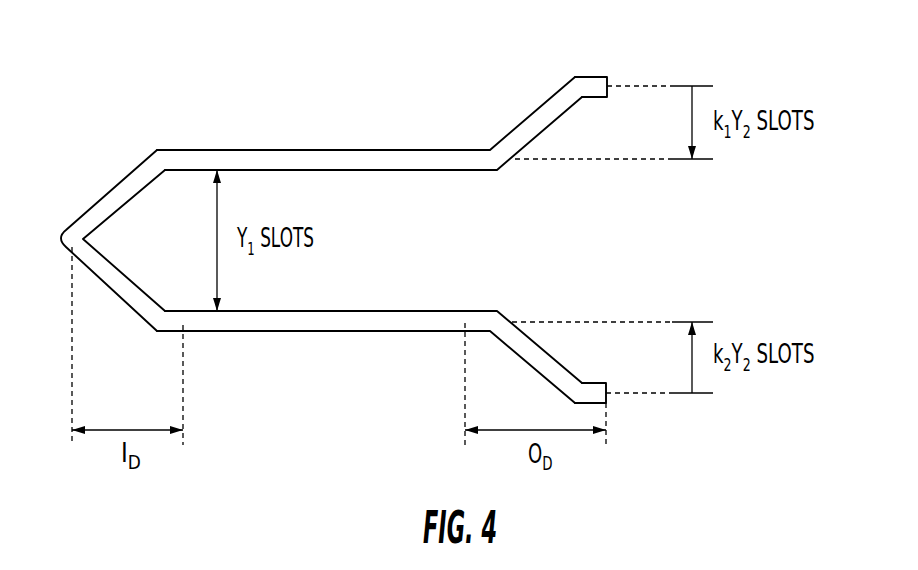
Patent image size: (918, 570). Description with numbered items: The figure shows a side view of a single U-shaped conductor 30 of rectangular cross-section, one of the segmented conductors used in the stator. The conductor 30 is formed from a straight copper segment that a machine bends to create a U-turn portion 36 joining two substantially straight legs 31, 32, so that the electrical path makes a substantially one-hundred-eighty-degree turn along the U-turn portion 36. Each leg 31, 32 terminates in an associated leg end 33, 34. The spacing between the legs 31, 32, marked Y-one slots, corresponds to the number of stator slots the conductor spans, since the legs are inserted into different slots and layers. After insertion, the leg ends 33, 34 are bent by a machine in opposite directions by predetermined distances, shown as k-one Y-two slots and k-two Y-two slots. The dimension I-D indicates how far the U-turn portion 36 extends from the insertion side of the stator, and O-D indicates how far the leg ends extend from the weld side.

The U-shaped conductor 30 is at (334, 212).
The leg 31 is at (376, 160).
The leg 32 is at (337, 322).
The leg end 33 is at (592, 85).
The leg end 34 is at (598, 382).
The U-turn portion 36 is at (120, 197).